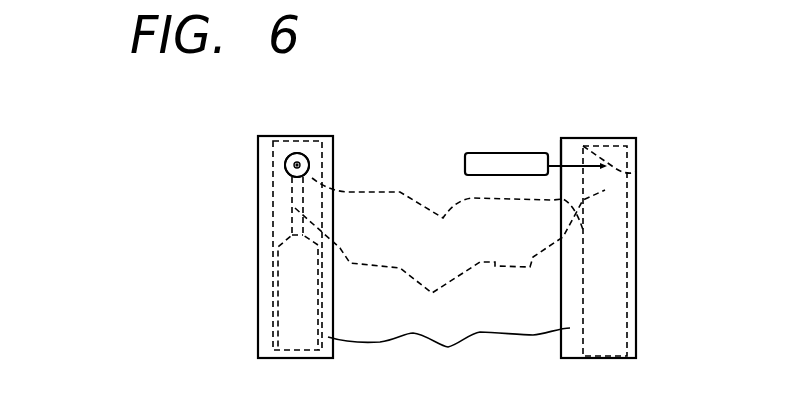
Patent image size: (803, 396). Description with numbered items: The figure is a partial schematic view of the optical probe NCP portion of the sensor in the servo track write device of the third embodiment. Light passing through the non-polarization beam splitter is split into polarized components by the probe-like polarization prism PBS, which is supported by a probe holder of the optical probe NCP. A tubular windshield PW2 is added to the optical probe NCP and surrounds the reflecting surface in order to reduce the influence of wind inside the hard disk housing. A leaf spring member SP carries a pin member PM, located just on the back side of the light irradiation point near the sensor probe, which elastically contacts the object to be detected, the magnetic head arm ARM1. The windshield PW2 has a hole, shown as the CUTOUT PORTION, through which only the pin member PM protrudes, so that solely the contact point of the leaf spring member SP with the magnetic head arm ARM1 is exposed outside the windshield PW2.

The pin member PM is at (309, 160).
The cutout portion CUTOUT PORTION is at (285, 166).
The magnetic head arm ARM1 is at (493, 165).
The polarization prism PBS is at (636, 172).
The optical probe NCP is at (447, 215).
The leaf spring member SP is at (450, 259).
The tubular windshield PW2 is at (449, 353).